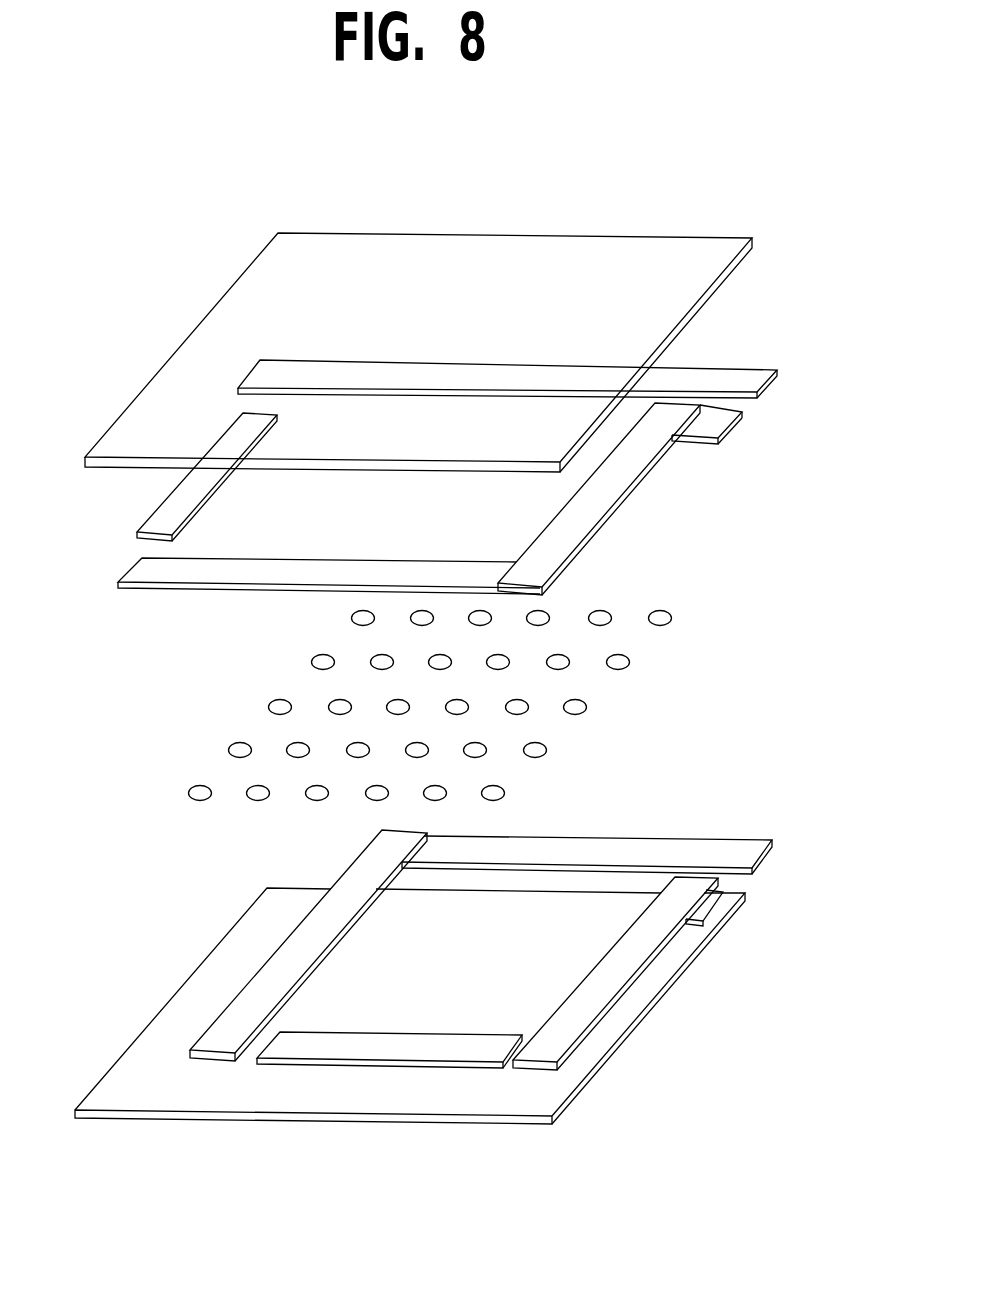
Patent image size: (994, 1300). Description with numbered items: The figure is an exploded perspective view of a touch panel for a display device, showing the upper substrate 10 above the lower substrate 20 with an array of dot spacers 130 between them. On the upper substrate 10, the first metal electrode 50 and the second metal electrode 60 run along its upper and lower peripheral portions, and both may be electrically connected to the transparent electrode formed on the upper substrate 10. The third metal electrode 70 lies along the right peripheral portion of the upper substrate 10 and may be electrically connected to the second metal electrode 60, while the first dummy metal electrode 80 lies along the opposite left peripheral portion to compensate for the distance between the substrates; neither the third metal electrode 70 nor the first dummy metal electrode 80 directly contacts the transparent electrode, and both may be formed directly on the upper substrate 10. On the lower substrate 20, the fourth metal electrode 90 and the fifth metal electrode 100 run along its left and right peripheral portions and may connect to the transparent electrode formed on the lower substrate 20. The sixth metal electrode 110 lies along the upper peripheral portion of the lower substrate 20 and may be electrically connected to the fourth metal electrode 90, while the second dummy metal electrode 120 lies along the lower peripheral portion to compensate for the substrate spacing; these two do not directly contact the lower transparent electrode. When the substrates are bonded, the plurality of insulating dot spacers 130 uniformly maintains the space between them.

The upper substrate 10 is at (683, 245).
The first metal electrode 50 is at (758, 370).
The third metal electrode 70 is at (608, 487).
The first dummy metal electrode 80 is at (165, 505).
The second metal electrode 60 is at (242, 575).
The dot spacers 130 is at (620, 665).
The sixth metal electrode 110 is at (677, 847).
The fourth metal electrode 90 is at (300, 940).
The fifth metal electrode 100 is at (613, 980).
The lower substrate 20 is at (542, 1092).
The second dummy metal electrode 120 is at (430, 1047).